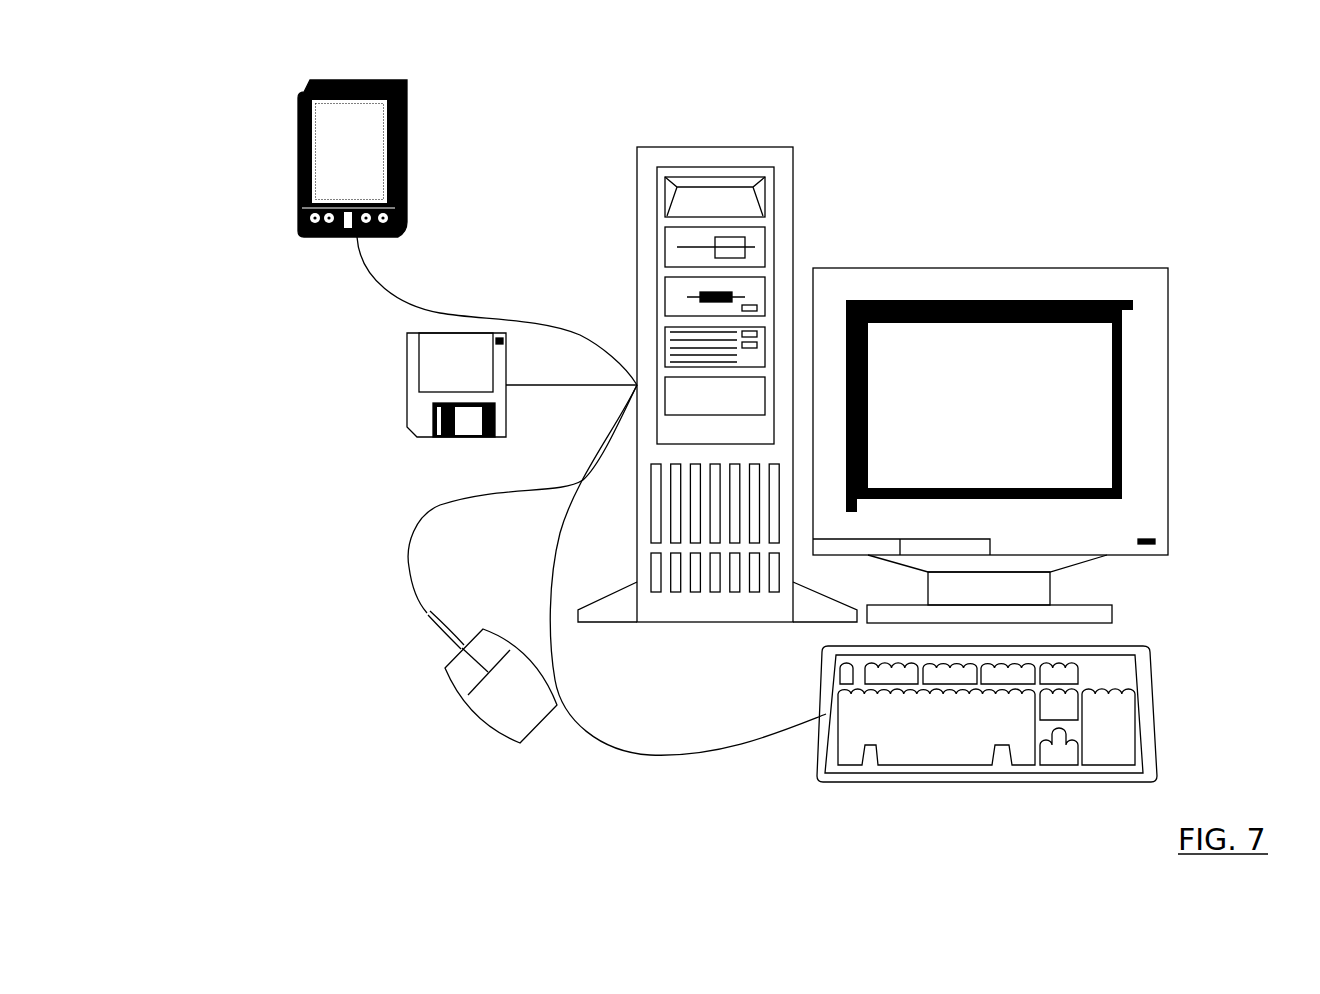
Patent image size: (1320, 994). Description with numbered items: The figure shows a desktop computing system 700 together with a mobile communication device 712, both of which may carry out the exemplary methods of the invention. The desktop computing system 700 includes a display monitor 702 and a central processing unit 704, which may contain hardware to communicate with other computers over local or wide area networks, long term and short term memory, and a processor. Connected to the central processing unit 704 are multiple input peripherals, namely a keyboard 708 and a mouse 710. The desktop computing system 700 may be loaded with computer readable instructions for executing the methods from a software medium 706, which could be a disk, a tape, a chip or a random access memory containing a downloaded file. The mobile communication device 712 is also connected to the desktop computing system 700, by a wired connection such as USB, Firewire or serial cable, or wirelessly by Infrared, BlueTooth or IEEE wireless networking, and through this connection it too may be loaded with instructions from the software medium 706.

The desktop computing system 700 is at (222, 387).
The display monitor 702 is at (990, 268).
The central processing unit 704 is at (700, 147).
The software medium 706 is at (478, 375).
The keyboard 708 is at (985, 783).
The mouse 710 is at (465, 695).
The mobile communication device 712 is at (368, 162).